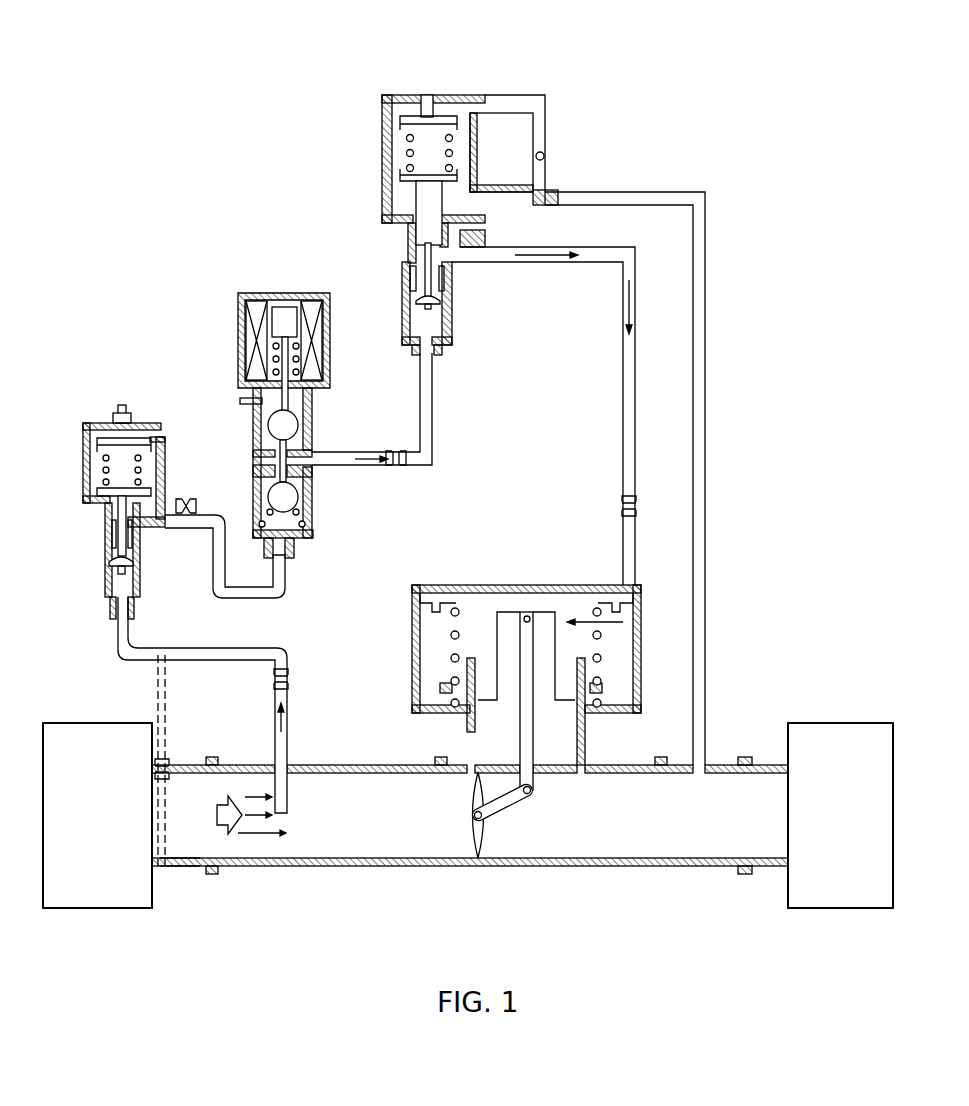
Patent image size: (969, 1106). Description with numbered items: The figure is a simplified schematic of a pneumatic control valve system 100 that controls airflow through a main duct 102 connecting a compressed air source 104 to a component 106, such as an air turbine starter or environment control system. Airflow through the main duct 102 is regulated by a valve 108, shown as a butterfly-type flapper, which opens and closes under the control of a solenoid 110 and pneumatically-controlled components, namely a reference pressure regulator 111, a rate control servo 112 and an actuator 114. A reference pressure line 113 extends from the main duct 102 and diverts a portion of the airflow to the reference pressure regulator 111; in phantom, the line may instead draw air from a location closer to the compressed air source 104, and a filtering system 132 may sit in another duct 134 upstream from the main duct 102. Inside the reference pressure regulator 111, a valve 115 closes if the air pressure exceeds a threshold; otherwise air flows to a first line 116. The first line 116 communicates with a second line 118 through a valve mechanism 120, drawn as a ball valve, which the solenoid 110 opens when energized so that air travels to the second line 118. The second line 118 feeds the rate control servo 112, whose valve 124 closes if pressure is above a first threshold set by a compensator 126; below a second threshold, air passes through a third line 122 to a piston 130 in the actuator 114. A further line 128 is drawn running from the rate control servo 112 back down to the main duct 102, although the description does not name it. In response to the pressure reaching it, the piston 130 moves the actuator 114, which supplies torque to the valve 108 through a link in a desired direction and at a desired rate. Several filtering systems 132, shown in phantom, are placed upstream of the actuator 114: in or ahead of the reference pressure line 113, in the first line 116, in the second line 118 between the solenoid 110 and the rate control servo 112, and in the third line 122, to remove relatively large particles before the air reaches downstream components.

The pneumatic control valve system 100 is at (727, 160).
The main duct 102 is at (412, 868).
The compressed air source 104 is at (97, 723).
The component 106 is at (838, 723).
The valve 108 is at (503, 843).
The solenoid 110 is at (247, 404).
The reference pressure regulator 111 is at (109, 465).
The rate control servo 112 is at (470, 179).
The reference pressure line 113 is at (220, 661).
The actuator 114 is at (550, 645).
The valve 115 is at (112, 561).
The first line 116 is at (262, 598).
The second line 118 is at (432, 405).
The valve mechanism 120 is at (299, 496).
The third line 122 is at (623, 404).
The valve 124 is at (442, 305).
The compensator 126 is at (470, 113).
The return line 128 is at (706, 482).
The piston 130 is at (602, 630).
The filtering system 132 is at (198, 503).
The duct 134 is at (182, 868).